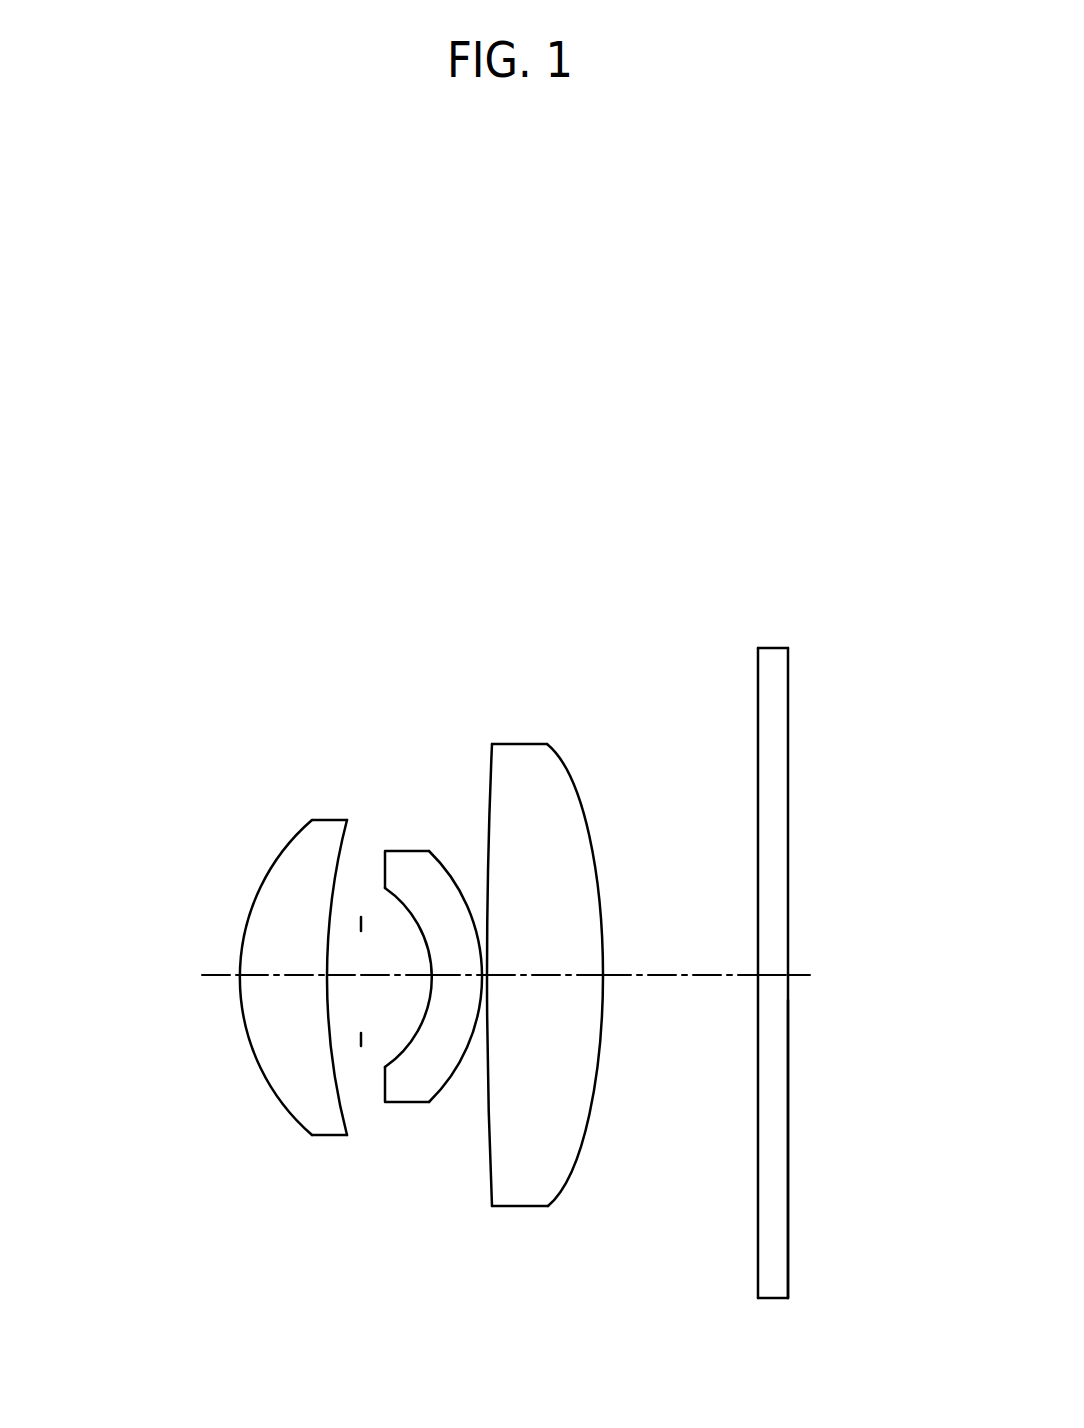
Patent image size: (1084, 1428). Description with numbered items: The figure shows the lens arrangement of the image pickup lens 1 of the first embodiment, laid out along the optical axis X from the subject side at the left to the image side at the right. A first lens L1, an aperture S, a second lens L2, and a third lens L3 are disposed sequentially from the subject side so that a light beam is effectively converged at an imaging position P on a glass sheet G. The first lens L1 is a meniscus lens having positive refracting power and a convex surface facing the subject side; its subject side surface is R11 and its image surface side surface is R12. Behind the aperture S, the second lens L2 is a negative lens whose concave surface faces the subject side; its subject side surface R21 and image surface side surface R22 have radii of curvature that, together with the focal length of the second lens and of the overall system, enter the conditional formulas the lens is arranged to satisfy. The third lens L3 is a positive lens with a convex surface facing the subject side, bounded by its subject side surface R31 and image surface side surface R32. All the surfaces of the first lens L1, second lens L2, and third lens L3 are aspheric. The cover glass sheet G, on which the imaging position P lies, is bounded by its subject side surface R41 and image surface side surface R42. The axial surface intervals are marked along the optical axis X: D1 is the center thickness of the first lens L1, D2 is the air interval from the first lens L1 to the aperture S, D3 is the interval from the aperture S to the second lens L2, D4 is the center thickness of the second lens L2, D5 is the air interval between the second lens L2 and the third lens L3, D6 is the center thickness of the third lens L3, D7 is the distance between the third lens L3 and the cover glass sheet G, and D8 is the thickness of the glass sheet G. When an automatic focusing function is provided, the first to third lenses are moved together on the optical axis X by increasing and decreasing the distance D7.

The image pickup lens 1 is at (275, 458).
The optical axis X is at (493, 985).
The first lens L1 is at (283, 898).
The second lens L2 is at (422, 940).
The third lens L3 is at (545, 938).
The aperture S is at (361, 1036).
The glass sheet G is at (766, 972).
The imaging position P is at (789, 1223).
The subject side lens surface of the first lens R11 is at (298, 836).
The image surface side lens surface of the first lens R12 is at (348, 824).
The radius of curvature of the subject side lens surface of the second lens R21 is at (384, 850).
The radius of curvature of the image surface side lens surface of the second lens R22 is at (445, 863).
The subject side lens surface of the third lens R31 is at (492, 762).
The image surface side lens surface of the third lens R32 is at (548, 745).
The subject side surface of the glass sheet R41 is at (758, 683).
The image surface side surface of the glass sheet R42 is at (788, 677).
The axial surface interval D1 is at (273, 977).
The axial surface interval D2 is at (343, 975).
The axial surface interval D3 is at (378, 977).
The axial surface interval D4 is at (448, 975).
The axial surface interval D5 is at (485, 975).
The axial surface interval D6 is at (532, 975).
The distance between the third lens and the cover glass sheet D7 is at (665, 975).
The axial surface interval D8 is at (772, 975).